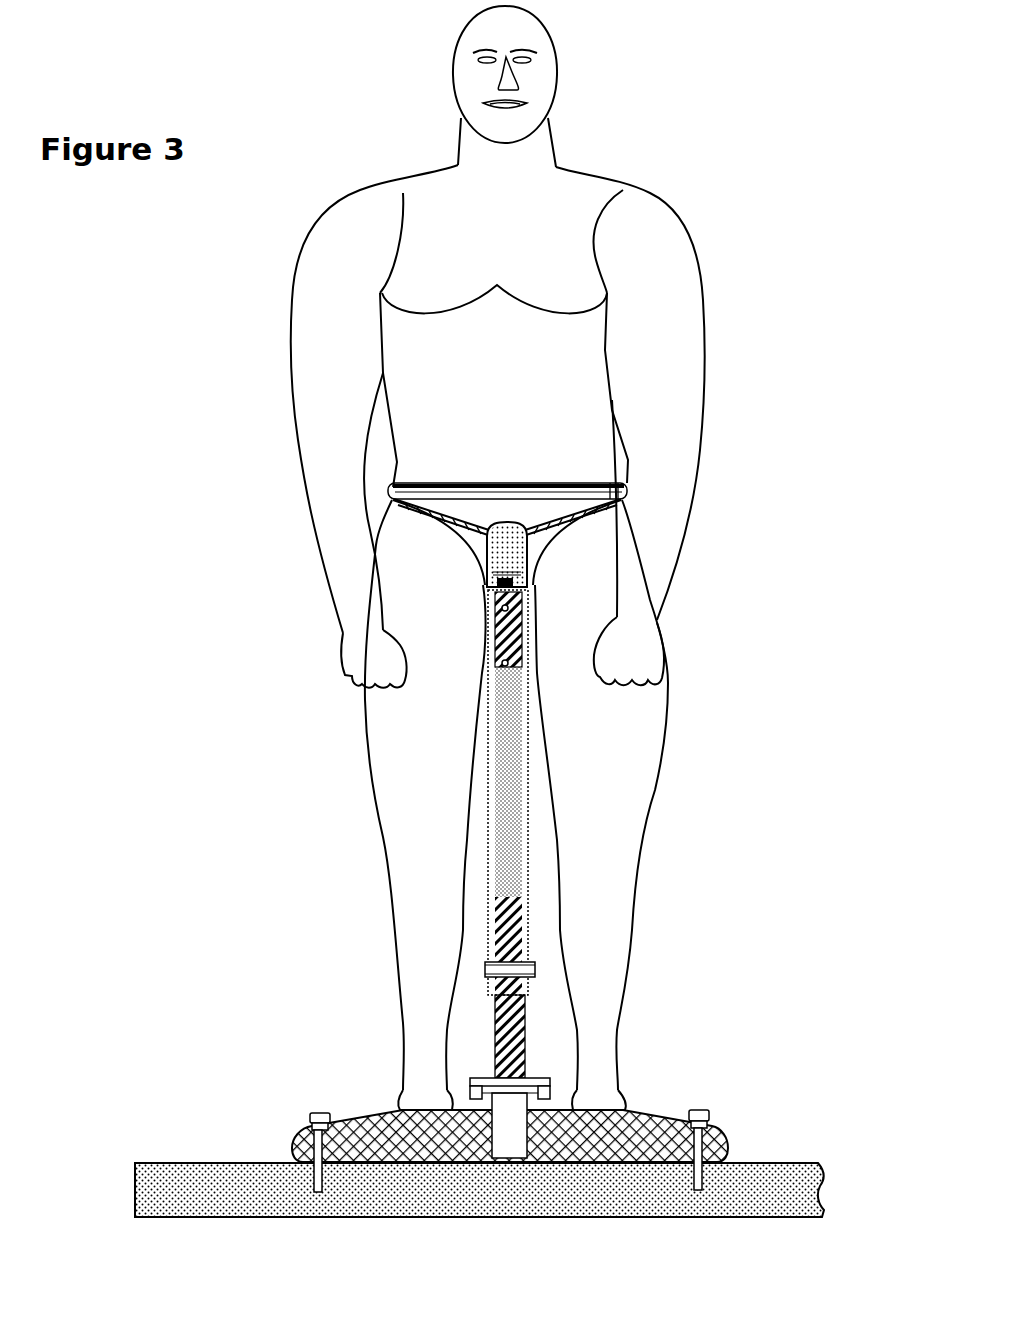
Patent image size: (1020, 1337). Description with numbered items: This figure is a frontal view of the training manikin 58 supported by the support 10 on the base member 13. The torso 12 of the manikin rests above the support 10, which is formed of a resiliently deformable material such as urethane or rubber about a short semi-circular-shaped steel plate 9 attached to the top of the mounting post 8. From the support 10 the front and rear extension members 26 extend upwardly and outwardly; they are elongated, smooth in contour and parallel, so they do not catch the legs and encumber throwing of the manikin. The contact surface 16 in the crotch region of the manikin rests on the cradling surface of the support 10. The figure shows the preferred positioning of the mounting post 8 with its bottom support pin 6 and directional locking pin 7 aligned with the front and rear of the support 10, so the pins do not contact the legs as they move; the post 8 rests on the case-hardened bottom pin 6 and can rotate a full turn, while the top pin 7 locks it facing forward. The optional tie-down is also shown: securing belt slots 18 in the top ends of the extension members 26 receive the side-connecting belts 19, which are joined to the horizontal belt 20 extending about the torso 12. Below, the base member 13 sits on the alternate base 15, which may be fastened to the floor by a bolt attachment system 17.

The training manikin 58 is at (732, 257).
The torso 12 is at (480, 417).
The base member 13 is at (412, 805).
The horizontal belt 20 is at (612, 485).
The side-connecting belts 19 is at (623, 500).
The securing belt slots 18 is at (395, 488).
The support 10 is at (487, 567).
The extension members 26 is at (507, 541).
The semi-circular-shaped steel plate 9 is at (527, 582).
The bottom pin 6 is at (507, 640).
The mounting post 8 is at (498, 632).
The top pin 7 is at (497, 608).
The alternate base 15 is at (638, 1123).
The contact surface 16 is at (517, 1087).
The bolt attachment system 17 is at (707, 1128).